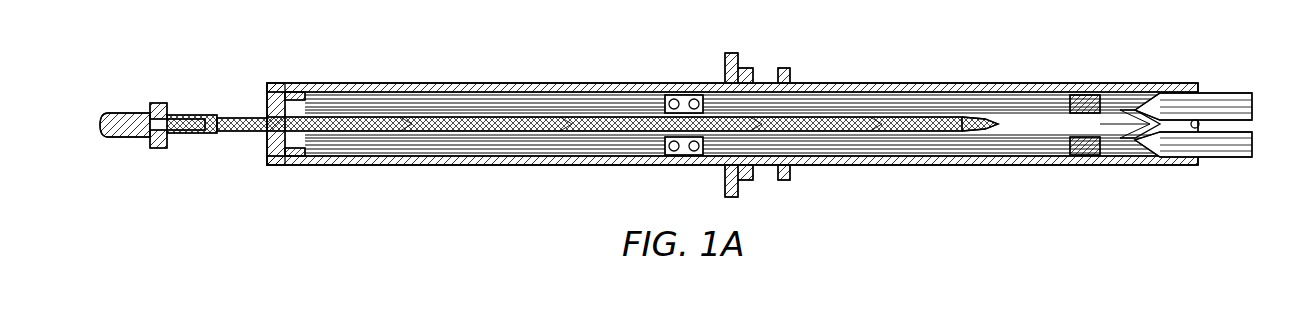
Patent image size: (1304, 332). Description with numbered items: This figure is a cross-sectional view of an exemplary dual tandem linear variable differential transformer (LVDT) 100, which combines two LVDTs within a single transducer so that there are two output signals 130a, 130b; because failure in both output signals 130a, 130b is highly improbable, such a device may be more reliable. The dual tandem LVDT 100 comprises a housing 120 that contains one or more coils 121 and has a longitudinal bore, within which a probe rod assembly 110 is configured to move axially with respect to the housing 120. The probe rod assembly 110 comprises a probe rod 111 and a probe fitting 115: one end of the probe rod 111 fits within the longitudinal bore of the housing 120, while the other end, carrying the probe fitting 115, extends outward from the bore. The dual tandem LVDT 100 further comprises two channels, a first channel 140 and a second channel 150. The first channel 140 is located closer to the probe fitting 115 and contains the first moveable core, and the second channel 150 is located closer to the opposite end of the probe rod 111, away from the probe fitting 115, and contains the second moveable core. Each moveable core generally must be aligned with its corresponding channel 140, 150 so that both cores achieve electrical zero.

The dual tandem linear variable differential transformer (LVDT) 100 is at (288, 37).
The probe rod assembly 110 is at (186, 104).
The probe rod 111 is at (236, 133).
The probe fitting 115 is at (128, 112).
The housing 120 is at (1030, 86).
The coils 121 is at (543, 100).
The output signal 130a is at (1219, 92).
The output signal 130b is at (1220, 160).
The first channel 140 is at (433, 86).
The second channel 150 is at (920, 88).